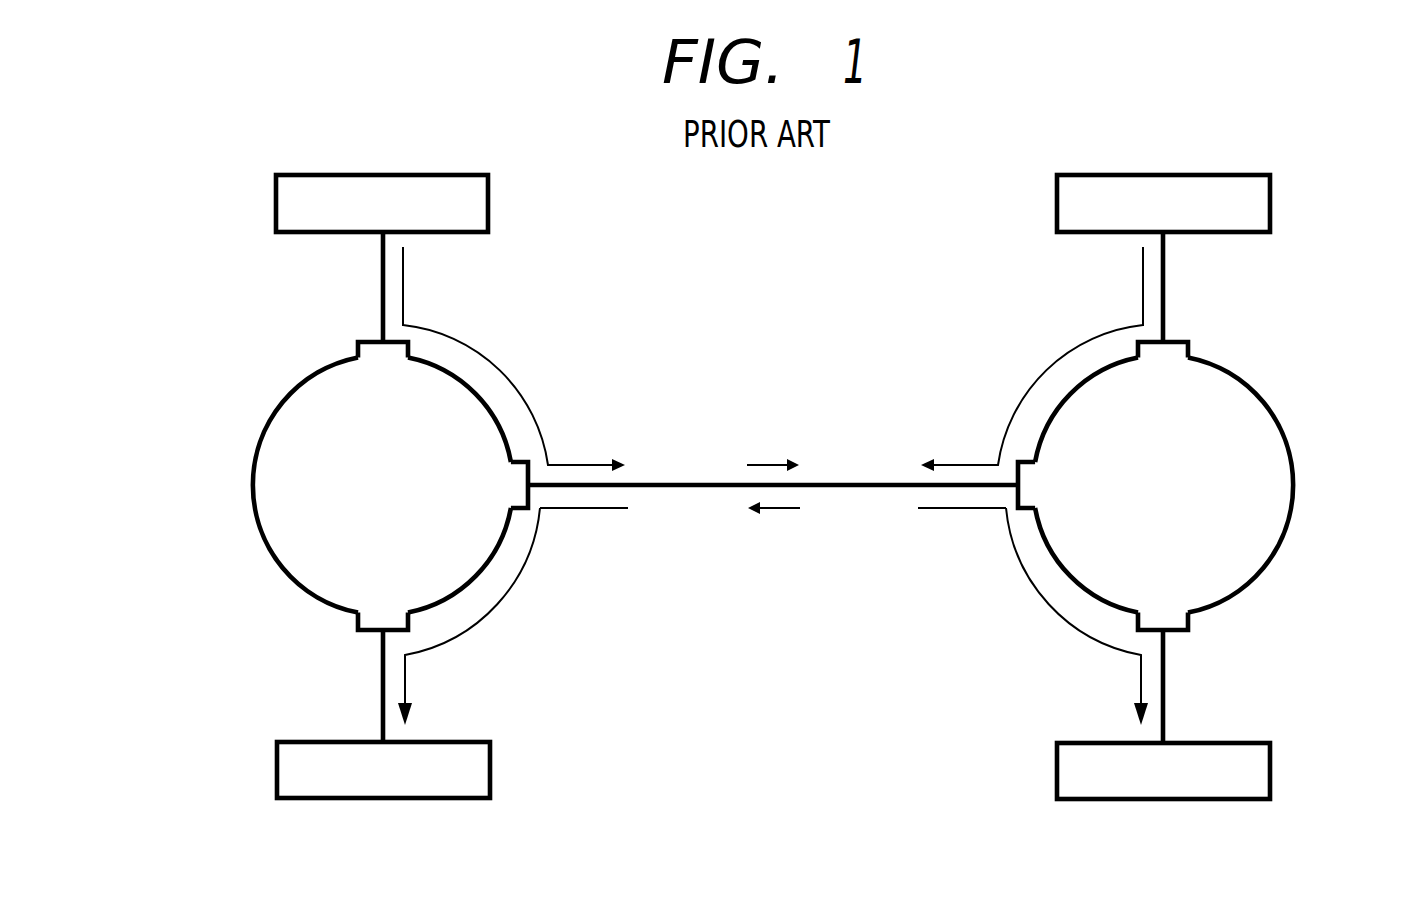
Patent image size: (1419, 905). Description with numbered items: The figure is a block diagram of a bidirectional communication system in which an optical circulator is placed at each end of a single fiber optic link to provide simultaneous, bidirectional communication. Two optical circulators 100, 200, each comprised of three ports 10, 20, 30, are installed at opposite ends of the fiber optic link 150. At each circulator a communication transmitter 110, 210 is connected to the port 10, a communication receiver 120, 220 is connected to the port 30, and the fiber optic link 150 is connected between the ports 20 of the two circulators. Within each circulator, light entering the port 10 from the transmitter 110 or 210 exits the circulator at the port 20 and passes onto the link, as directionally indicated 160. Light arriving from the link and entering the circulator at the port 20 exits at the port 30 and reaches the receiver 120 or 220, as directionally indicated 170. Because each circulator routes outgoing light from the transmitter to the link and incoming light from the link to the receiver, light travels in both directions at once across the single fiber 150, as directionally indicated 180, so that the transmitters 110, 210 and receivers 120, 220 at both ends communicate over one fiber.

The port 10 is at (362, 356).
The port 20 is at (524, 509).
The port 30 is at (362, 620).
The optical circulator 100 is at (252, 486).
The communication transmitter 110 is at (275, 205).
The communication receiver 120 is at (277, 770).
The fiber optic link 150 is at (840, 485).
The directional indication of light from port 10 to port 20 160 is at (496, 374).
The directional indication of light from port 20 to port 30 170 is at (508, 603).
The directional indication of bidirectional light 180 is at (772, 462).
The optical circulator 200 is at (1294, 486).
The communication transmitter 210 is at (1271, 205).
The communication receiver 220 is at (1270, 770).